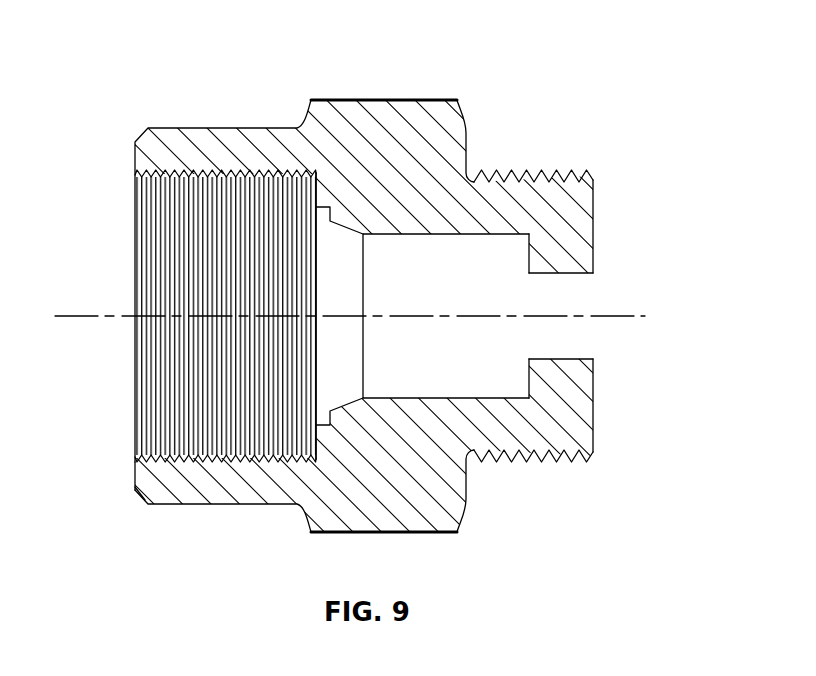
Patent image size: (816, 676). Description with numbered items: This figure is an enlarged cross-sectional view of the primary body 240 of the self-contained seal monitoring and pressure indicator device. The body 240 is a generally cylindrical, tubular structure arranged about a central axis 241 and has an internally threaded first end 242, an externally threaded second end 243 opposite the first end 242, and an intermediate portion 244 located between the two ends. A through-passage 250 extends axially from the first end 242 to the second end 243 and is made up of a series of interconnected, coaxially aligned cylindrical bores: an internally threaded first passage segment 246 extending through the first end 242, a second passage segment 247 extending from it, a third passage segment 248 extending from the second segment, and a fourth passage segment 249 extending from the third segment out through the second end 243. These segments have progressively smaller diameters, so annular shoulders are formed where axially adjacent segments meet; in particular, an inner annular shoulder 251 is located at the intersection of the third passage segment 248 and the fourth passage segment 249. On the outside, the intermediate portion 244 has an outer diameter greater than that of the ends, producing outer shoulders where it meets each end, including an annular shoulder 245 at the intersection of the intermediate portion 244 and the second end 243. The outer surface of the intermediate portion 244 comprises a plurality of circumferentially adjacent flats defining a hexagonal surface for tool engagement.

The body 240 is at (356, 118).
The central axis 241 is at (93, 315).
The first end 242 is at (146, 127).
The second end 243 is at (583, 196).
The intermediate portion 244 is at (413, 120).
The annular shoulder 245 is at (470, 140).
The first passage segment 246 is at (166, 250).
The second passage segment 247 is at (328, 290).
The third passage segment 248 is at (451, 300).
The fourth passage segment 249 is at (586, 290).
The through-passage 250 is at (156, 408).
The inner annular shoulder 251 is at (527, 380).